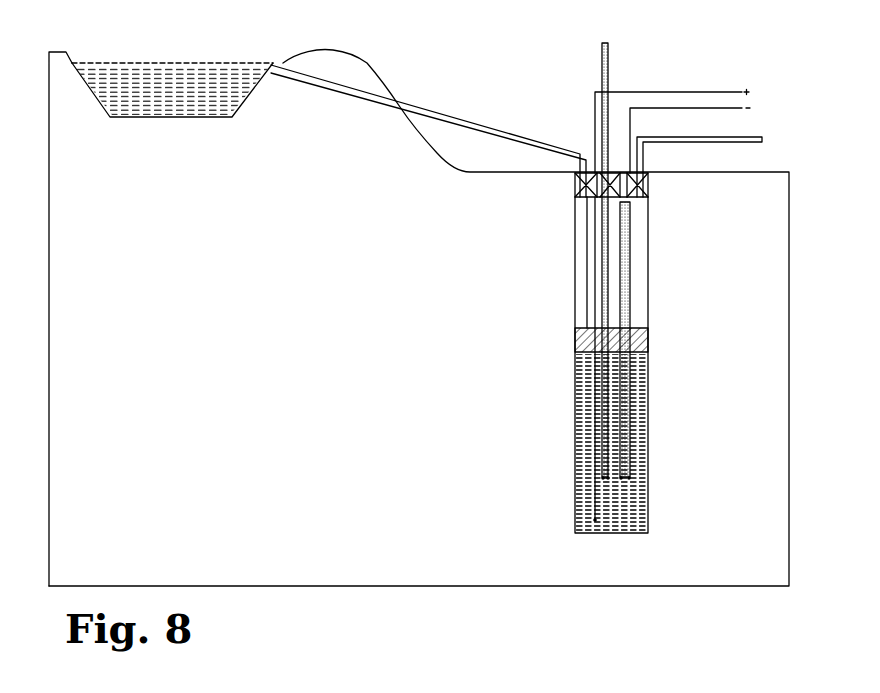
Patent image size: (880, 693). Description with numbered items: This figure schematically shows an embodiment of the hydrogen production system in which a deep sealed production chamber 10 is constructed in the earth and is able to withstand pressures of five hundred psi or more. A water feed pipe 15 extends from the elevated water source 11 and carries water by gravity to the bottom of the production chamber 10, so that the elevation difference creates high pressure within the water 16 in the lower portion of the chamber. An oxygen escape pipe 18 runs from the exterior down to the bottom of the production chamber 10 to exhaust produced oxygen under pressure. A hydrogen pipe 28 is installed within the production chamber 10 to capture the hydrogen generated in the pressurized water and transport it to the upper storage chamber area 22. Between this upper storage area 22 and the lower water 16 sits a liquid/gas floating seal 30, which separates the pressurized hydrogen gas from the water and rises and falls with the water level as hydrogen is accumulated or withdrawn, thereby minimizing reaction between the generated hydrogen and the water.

The production chamber 10 is at (648, 437).
The water source 11 is at (147, 63).
The water feed pipe 15 is at (508, 135).
The water 16 is at (630, 517).
The oxygen escape pipe 18 is at (610, 68).
The upper storage chamber area 22 is at (640, 288).
The hydrogen pipe 28 is at (620, 228).
The liquid/gas floating seal 30 is at (647, 338).